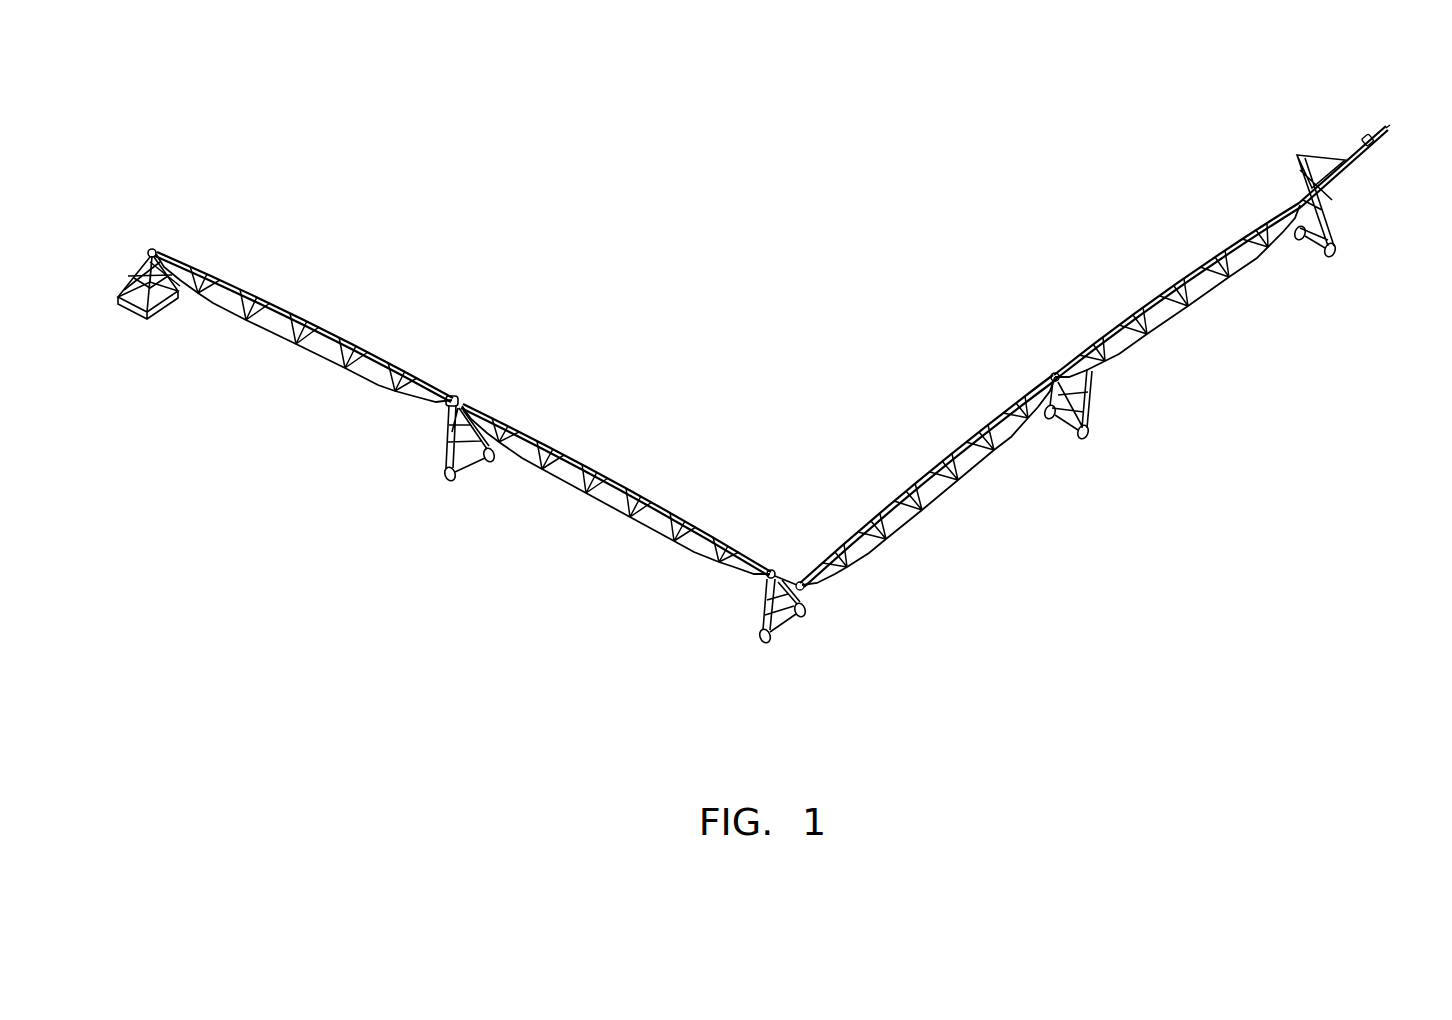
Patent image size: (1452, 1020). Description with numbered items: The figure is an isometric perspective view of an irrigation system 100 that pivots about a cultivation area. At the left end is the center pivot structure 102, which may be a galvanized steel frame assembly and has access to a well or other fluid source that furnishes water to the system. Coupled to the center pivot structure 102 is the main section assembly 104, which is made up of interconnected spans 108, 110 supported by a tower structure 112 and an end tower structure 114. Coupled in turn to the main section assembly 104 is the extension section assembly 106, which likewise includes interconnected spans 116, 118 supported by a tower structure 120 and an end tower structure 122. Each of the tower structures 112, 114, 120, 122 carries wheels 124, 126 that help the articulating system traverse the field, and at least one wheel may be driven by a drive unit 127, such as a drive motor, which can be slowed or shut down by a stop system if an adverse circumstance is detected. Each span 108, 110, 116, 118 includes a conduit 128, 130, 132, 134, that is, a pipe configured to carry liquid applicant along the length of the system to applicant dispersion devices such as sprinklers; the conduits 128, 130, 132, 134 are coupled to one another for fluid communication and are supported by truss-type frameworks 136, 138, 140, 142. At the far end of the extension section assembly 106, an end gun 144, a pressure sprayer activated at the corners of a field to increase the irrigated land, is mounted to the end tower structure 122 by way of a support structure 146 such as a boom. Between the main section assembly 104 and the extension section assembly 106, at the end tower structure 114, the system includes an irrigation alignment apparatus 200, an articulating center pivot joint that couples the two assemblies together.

The irrigation system 100 is at (495, 262).
The center pivot structure 102 is at (130, 265).
The main section assembly 104 is at (478, 378).
The extension section assembly 106 is at (1055, 345).
The span 108 is at (304, 329).
The span 110 is at (616, 478).
The tower structure 112 is at (452, 422).
The end tower structure 114 is at (762, 600).
The span 116 is at (928, 467).
The span 118 is at (1221, 272).
The tower structure 120 is at (1090, 385).
The end tower structure 122 is at (1335, 215).
The wheel 124 is at (448, 478).
The wheel 126 is at (495, 465).
The drive unit 127 is at (472, 468).
The conduit 128 is at (362, 330).
The conduit 130 is at (638, 490).
The conduit 132 is at (882, 495).
The conduit 134 is at (1130, 312).
The truss-type framework 136 is at (300, 360).
The truss-type framework 138 is at (622, 540).
The truss-type framework 140 is at (958, 500).
The truss-type framework 142 is at (1193, 318).
The end gun 144 is at (1375, 135).
The support structure 146 is at (1358, 160).
The irrigation alignment apparatus 200 is at (800, 562).